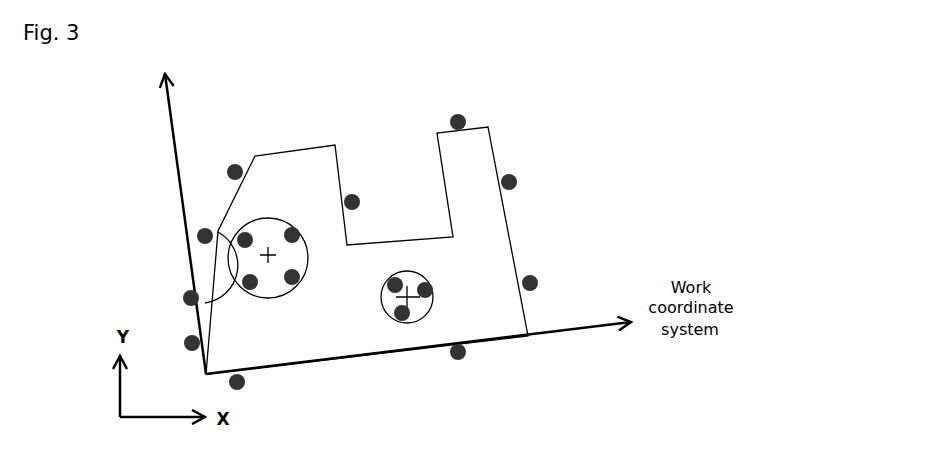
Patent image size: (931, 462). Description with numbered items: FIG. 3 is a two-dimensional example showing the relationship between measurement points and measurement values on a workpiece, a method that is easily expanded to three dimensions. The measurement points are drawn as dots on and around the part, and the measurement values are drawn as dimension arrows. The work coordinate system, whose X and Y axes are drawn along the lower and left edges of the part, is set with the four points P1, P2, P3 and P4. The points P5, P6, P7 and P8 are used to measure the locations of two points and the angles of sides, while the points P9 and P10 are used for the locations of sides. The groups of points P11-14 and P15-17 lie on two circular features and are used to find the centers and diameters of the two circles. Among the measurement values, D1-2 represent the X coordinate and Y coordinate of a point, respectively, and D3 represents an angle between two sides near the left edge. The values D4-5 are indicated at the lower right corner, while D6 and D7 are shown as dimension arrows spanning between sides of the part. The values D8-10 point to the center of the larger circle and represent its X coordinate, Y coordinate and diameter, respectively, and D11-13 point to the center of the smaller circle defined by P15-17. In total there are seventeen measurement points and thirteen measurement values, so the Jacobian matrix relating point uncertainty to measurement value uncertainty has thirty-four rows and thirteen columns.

The measurement point P1 is at (250, 386).
The measurement point P2 is at (472, 357).
The measurement point P3 is at (178, 341).
The measurement point P4 is at (175, 296).
The measurement point P5 is at (201, 223).
The measurement point P6 is at (231, 159).
The measurement point P7 is at (521, 174).
The measurement point P8 is at (543, 282).
The measurement point P9 is at (363, 190).
The measurement point P10 is at (469, 109).
The measurement points P11-14 is at (273, 248).
The measurement points P15-17 is at (381, 299).
The measurement values D1-2 is at (238, 236).
The measurement value D3 is at (225, 309).
The measurement values D4-5 is at (534, 337).
The measurement value D6 is at (493, 149).
The measurement value D7 is at (467, 129).
The measurement values D8-10 is at (268, 262).
The measurement values D11-13 is at (405, 295).